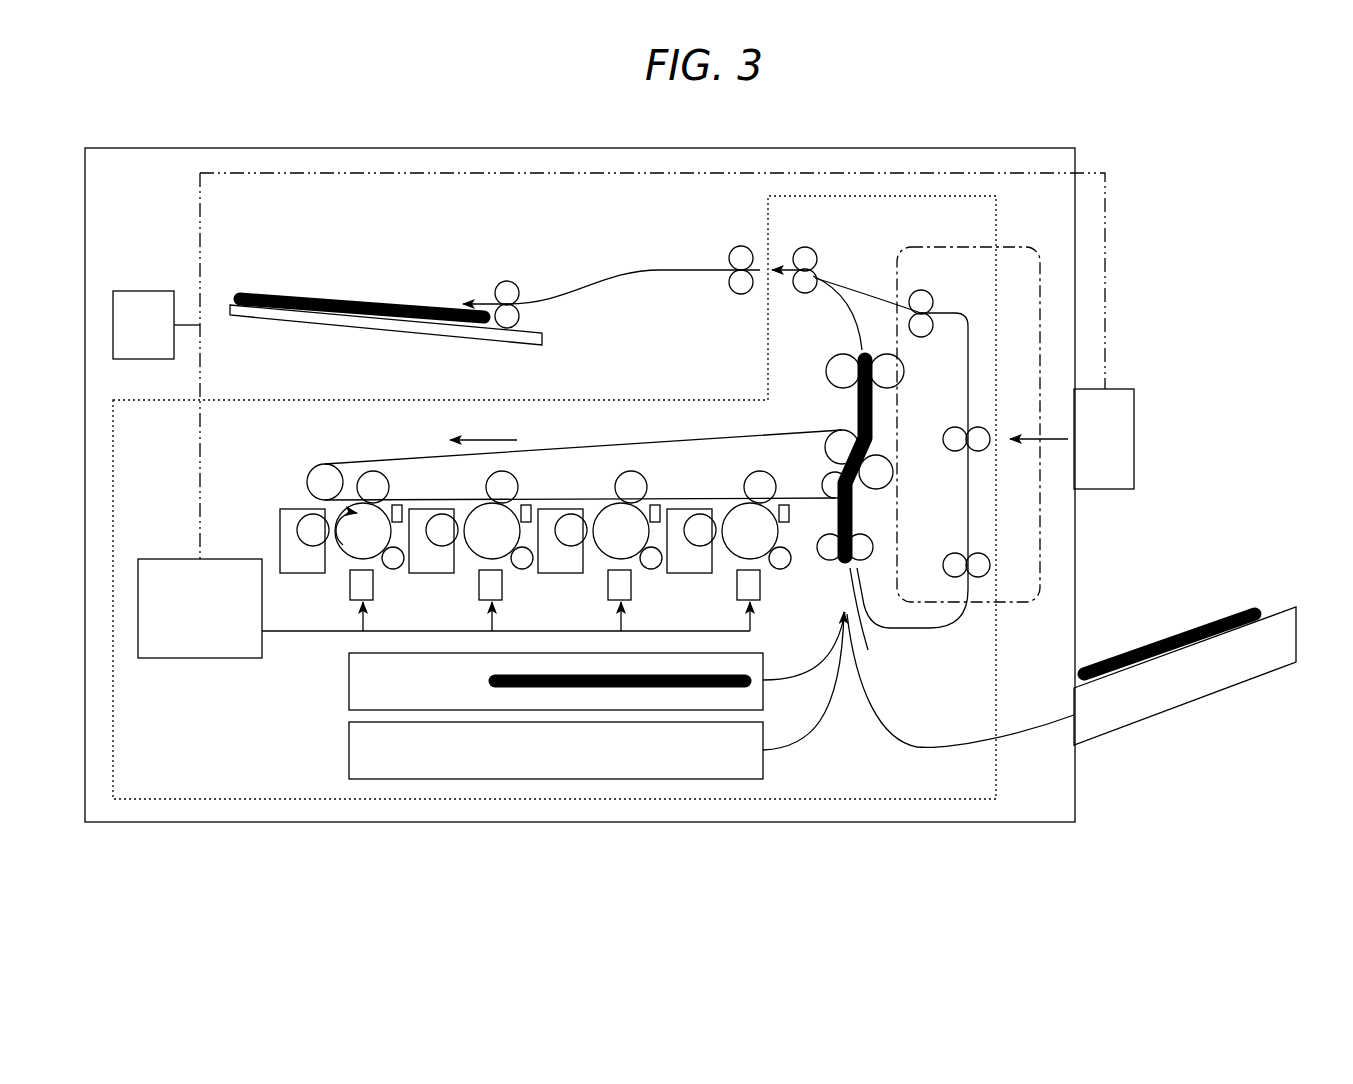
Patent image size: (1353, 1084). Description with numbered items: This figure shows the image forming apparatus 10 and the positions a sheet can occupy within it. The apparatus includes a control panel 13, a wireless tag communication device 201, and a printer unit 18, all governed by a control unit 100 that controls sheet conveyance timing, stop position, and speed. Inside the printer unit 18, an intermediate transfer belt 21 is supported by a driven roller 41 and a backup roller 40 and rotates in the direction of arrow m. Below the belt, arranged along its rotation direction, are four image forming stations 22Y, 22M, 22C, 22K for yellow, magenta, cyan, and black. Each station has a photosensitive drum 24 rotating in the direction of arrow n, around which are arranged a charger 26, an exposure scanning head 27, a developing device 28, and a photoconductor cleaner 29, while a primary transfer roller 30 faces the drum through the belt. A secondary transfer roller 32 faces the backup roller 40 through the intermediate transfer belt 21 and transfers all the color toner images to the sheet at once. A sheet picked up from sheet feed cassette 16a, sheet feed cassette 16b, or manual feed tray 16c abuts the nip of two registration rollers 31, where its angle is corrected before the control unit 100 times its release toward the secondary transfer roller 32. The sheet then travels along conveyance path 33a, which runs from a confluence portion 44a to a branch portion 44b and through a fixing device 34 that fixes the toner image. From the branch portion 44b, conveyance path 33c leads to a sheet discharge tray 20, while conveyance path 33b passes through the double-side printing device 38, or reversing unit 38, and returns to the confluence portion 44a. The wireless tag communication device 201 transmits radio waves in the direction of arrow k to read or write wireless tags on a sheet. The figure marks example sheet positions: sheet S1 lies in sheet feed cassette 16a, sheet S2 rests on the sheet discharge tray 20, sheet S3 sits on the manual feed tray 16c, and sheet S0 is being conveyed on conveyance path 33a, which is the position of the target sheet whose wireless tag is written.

The image forming apparatus 10 is at (262, 142).
The control panel 13 is at (156, 291).
The printer unit 18 is at (160, 398).
The sheet discharge tray 20 is at (262, 318).
The intermediate transfer belt 21 is at (640, 441).
The photosensitive drum 24 is at (337, 508).
The charger 26 is at (402, 566).
The exposure scanning head 27 is at (350, 590).
The developing device 28 is at (280, 528).
The photoconductor cleaner 29 is at (399, 505).
The primary transfer roller 30 is at (368, 472).
The registration rollers 31 is at (834, 562).
The secondary transfer roller 32 is at (894, 473).
The conveyance path 33a is at (858, 410).
The conveyance path 33b is at (873, 298).
The conveyance path 33c is at (762, 268).
The fixing device 34 is at (857, 346).
The double-side printing device 38 is at (1010, 244).
The backup roller 40 is at (826, 448).
The driven roller 41 is at (312, 470).
The confluence portion 44a is at (918, 659).
The branch portion 44b is at (843, 282).
The control unit 100 is at (166, 559).
The wireless tag communication device 201 is at (1121, 389).
The sheet feed cassette 16a is at (349, 676).
The sheet feed cassette 16b is at (349, 745).
The manual feed tray 16c is at (1282, 607).
The image forming station 22Y is at (384, 577).
The image forming station 22M is at (509, 575).
The image forming station 22C is at (637, 575).
The image forming station 22K is at (730, 573).
The sheet S0 is at (854, 520).
The sheet S1 is at (490, 681).
The sheet S2 is at (360, 300).
The sheet S3 is at (1208, 623).
The arrow m is at (508, 440).
The arrow n is at (338, 548).
The arrow k is at (1039, 430).